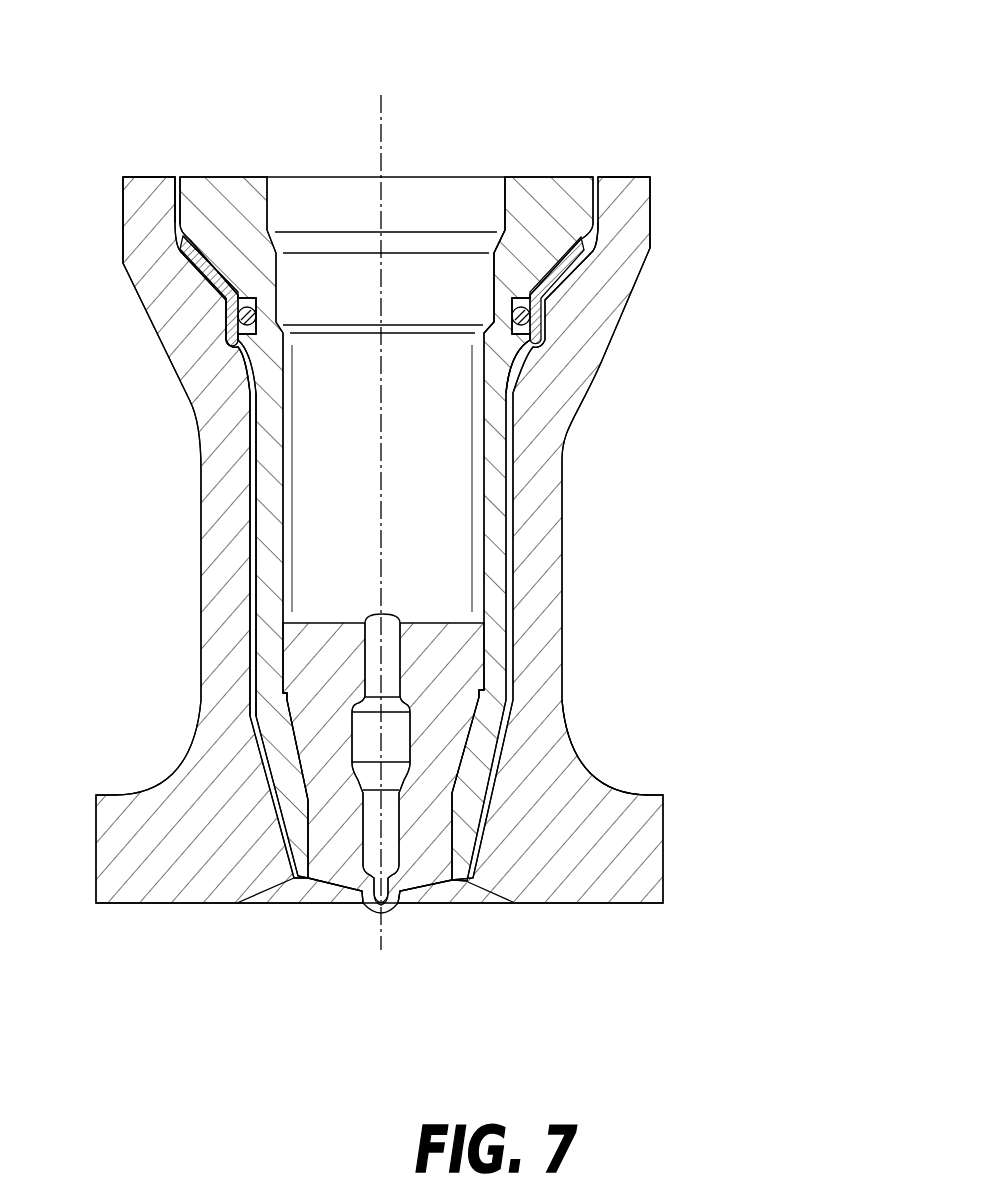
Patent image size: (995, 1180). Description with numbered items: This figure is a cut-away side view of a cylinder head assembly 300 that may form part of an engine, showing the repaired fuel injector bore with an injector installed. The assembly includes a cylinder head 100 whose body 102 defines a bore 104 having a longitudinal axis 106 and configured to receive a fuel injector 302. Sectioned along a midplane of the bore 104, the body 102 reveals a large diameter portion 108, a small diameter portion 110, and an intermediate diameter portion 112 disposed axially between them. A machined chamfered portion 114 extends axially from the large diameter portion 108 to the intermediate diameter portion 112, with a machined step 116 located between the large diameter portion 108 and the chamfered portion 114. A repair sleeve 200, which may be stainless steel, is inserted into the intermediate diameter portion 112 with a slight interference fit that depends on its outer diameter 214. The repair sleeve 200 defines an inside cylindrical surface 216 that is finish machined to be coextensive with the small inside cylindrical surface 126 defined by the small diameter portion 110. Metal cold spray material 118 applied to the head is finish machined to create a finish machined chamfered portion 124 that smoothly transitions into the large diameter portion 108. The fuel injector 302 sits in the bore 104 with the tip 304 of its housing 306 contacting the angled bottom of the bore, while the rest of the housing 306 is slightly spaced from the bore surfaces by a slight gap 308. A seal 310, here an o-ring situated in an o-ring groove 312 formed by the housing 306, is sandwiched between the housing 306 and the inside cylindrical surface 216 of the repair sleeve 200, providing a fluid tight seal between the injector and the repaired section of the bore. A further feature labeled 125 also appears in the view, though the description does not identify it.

The cylinder head 100 is at (651, 311).
The body 102 is at (481, 540).
The bore 104 is at (198, 253).
The longitudinal axis 106 is at (381, 115).
The large diameter portion 108 is at (600, 214).
The small diameter portion 110 is at (527, 368).
The intermediate diameter portion 112 is at (222, 316).
The machined chamfered portion 114 is at (224, 302).
The machined step 116 is at (174, 244).
The metal cold spray material 118 is at (582, 262).
The finish machined chamfered portion 124 is at (190, 247).
The fillet 125 is at (481, 806).
The small inside cylindrical surface 126 is at (605, 375).
The repair sleeve 200 is at (561, 312).
The outer diameter 214 is at (550, 318).
The inside cylindrical surface 216 is at (247, 357).
The cylinder head assembly 300 is at (788, 162).
The fuel injector 302 is at (496, 537).
The tip 304 is at (470, 822).
The housing 306 is at (498, 688).
The gap 308 is at (256, 630).
The seal 310 is at (523, 297).
The o-ring groove 312 is at (522, 393).